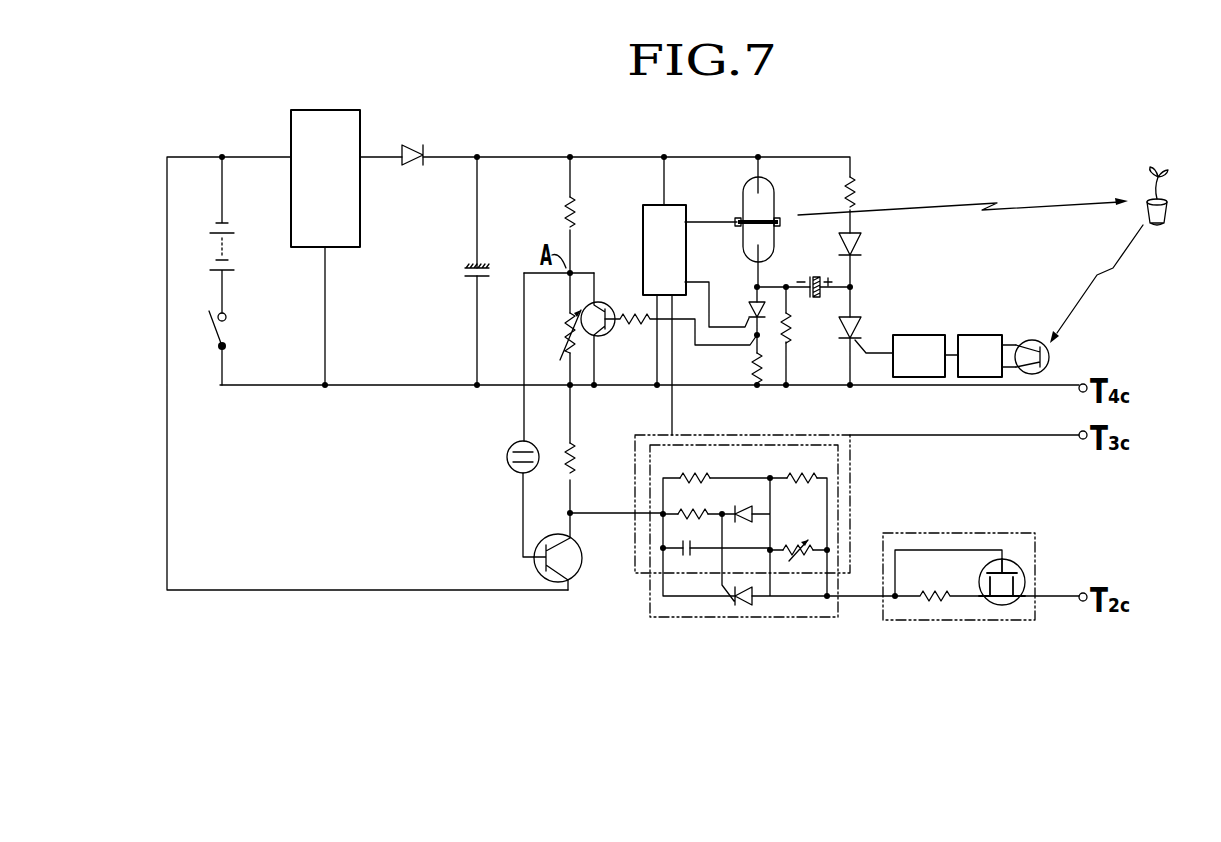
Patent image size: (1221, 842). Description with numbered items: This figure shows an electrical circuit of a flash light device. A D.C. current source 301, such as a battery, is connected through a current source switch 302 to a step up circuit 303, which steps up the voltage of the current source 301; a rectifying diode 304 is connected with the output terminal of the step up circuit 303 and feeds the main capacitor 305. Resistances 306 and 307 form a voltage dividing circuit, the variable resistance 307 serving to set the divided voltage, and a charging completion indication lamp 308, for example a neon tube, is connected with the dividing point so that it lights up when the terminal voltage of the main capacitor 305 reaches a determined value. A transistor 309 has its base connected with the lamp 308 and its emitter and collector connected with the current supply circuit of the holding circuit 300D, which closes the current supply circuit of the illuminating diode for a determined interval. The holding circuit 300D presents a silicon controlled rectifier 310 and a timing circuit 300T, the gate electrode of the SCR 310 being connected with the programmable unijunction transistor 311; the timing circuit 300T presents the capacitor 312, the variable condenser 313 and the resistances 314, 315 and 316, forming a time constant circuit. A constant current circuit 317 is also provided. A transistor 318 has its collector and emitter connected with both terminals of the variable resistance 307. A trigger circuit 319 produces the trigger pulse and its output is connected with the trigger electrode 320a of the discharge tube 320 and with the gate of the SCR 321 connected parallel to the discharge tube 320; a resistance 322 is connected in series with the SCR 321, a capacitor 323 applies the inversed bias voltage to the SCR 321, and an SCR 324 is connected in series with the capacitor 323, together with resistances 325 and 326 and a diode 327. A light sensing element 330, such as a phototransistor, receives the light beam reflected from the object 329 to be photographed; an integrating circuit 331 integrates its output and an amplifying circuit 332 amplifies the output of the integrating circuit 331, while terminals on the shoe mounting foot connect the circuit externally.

The D.C. current source 301 is at (216, 273).
The current source switch 302 is at (216, 342).
The step up circuit 303 is at (325, 247).
The rectifying diode 304 is at (421, 146).
The main capacitor 305 is at (458, 276).
The resistance 306 is at (551, 217).
The variable resistance 307 is at (565, 348).
The charging completion indication lamp 308 is at (511, 470).
The transistor 309 is at (536, 575).
The silicone control rectifying element 310 is at (743, 604).
The programable unijunction transistor 311 is at (741, 509).
The capacitor 312 is at (687, 542).
The variable condenser 313 is at (797, 541).
The resistance 314 is at (691, 500).
The resistance 315 is at (695, 465).
The resistance 316 is at (803, 465).
The constant current circuit 317 is at (910, 620).
The transistor 318 is at (615, 294).
The trigger circuit 319 is at (664, 250).
The discharge tube 320 is at (772, 181).
The trigger electrode 320a is at (740, 220).
The SCR 321 is at (751, 311).
The resistance 322 is at (752, 366).
The capacitor 323 is at (812, 275).
The SCR 324 is at (862, 331).
The resistance 325 is at (858, 196).
The resistance 326 is at (807, 330).
The diode 327 is at (862, 248).
The object 329 is at (1157, 226).
The light sensing element 330 is at (1032, 340).
The integrating circuit 331 is at (980, 356).
The amplifying circuit 332 is at (921, 335).
The timing circuit 300T is at (851, 470).
The holding circuit 300D is at (700, 617).